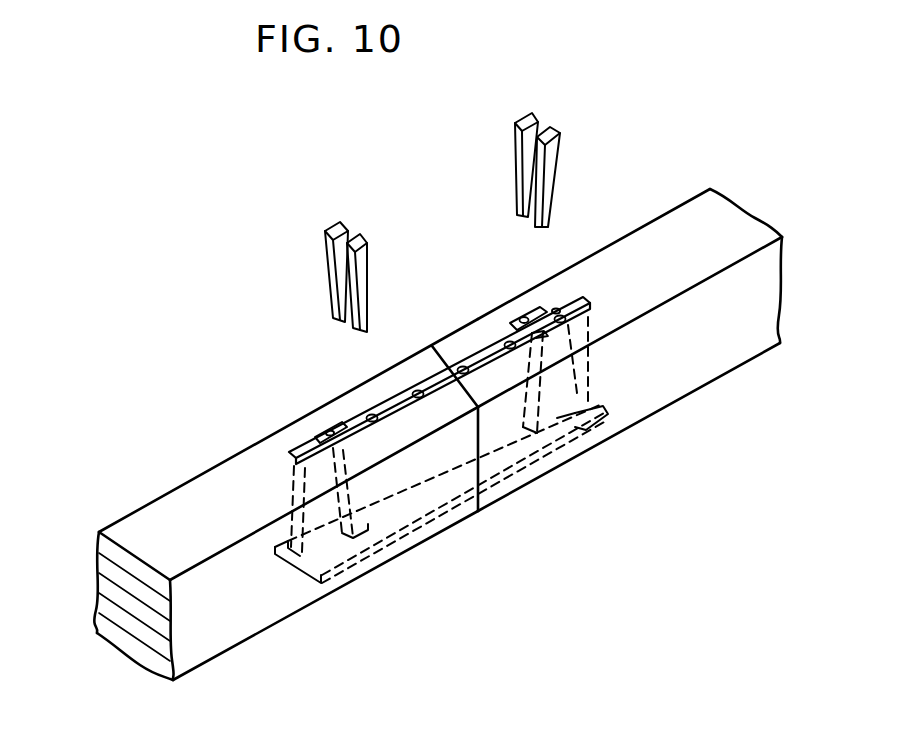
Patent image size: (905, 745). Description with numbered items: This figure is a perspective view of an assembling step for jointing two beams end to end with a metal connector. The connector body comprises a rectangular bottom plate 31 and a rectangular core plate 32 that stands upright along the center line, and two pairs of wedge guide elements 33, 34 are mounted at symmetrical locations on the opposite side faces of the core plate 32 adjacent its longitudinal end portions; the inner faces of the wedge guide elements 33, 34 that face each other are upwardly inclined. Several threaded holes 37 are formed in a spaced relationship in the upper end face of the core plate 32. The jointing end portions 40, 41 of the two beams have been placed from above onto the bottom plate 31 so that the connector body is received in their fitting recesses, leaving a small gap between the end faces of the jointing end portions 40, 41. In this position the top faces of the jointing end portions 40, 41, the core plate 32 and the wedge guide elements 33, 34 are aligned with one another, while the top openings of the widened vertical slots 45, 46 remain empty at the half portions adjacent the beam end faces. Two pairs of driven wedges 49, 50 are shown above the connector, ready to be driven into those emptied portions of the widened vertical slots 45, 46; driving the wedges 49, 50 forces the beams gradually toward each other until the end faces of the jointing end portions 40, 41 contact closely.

The bottom plate 31 is at (443, 505).
The core plate 32 is at (383, 410).
The wedge guide element 33 is at (330, 422).
The wedge guide element 34 is at (395, 553).
The threaded holes 37 is at (462, 366).
The jointing end portion 40 is at (183, 495).
The jointing end portion 41 is at (710, 348).
The widened vertical slot 45 is at (521, 318).
The widened vertical slot 46 is at (544, 332).
The driven wedge 49 is at (332, 283).
The driven wedge 50 is at (328, 260).